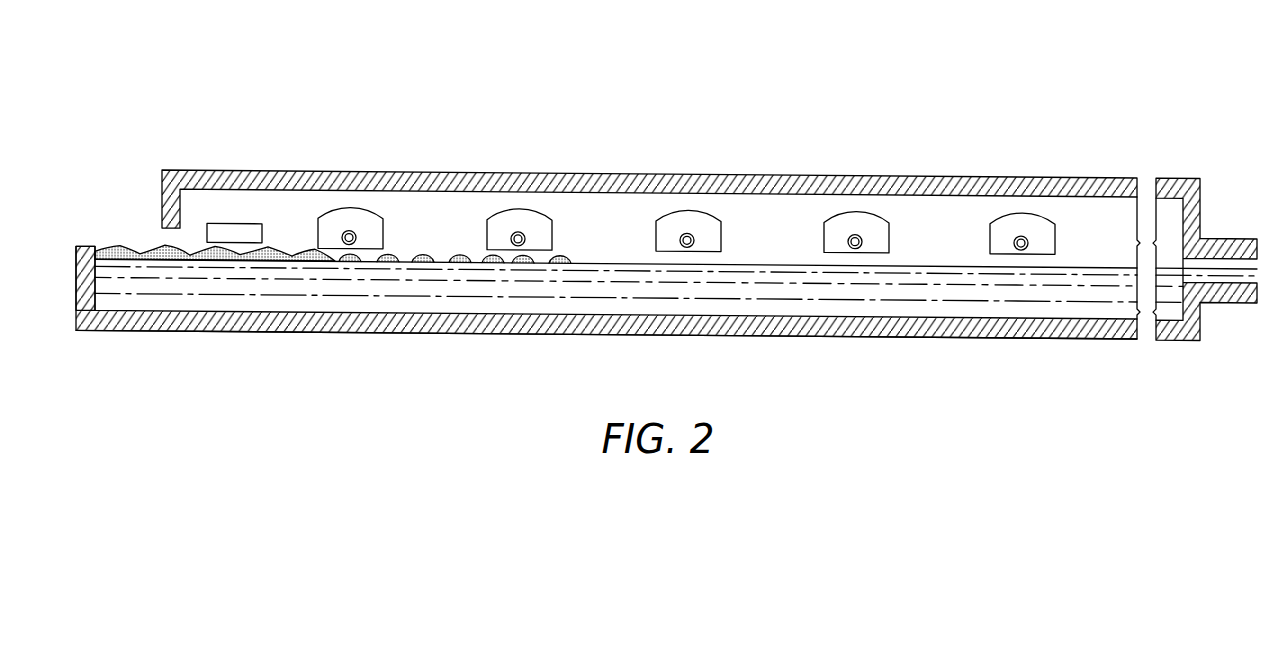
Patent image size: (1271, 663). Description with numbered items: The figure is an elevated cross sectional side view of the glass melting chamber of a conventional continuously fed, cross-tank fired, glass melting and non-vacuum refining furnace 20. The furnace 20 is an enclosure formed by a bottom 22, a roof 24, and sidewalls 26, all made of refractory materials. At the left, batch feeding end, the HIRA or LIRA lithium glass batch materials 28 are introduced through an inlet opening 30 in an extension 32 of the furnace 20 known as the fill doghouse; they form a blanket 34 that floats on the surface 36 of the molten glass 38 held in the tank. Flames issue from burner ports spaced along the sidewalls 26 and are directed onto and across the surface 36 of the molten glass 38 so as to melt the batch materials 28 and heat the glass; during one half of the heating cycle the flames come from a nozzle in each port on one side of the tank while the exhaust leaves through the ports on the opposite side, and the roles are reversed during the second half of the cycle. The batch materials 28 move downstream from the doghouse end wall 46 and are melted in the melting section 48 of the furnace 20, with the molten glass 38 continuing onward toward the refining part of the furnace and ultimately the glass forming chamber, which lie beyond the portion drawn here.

The glass melting and refining furnace 20 is at (993, 96).
The bottom 22 is at (930, 331).
The roof 24 is at (866, 169).
The sidewalls 26 is at (630, 208).
The glass batch materials 28 is at (192, 256).
The inlet opening 30 is at (125, 233).
The extension 32 is at (181, 332).
The blanket 34 is at (297, 255).
The surface 36 is at (802, 257).
The molten glass 38 is at (688, 288).
The doghouse end wall 46 is at (76, 269).
The melting section 48 is at (557, 106).